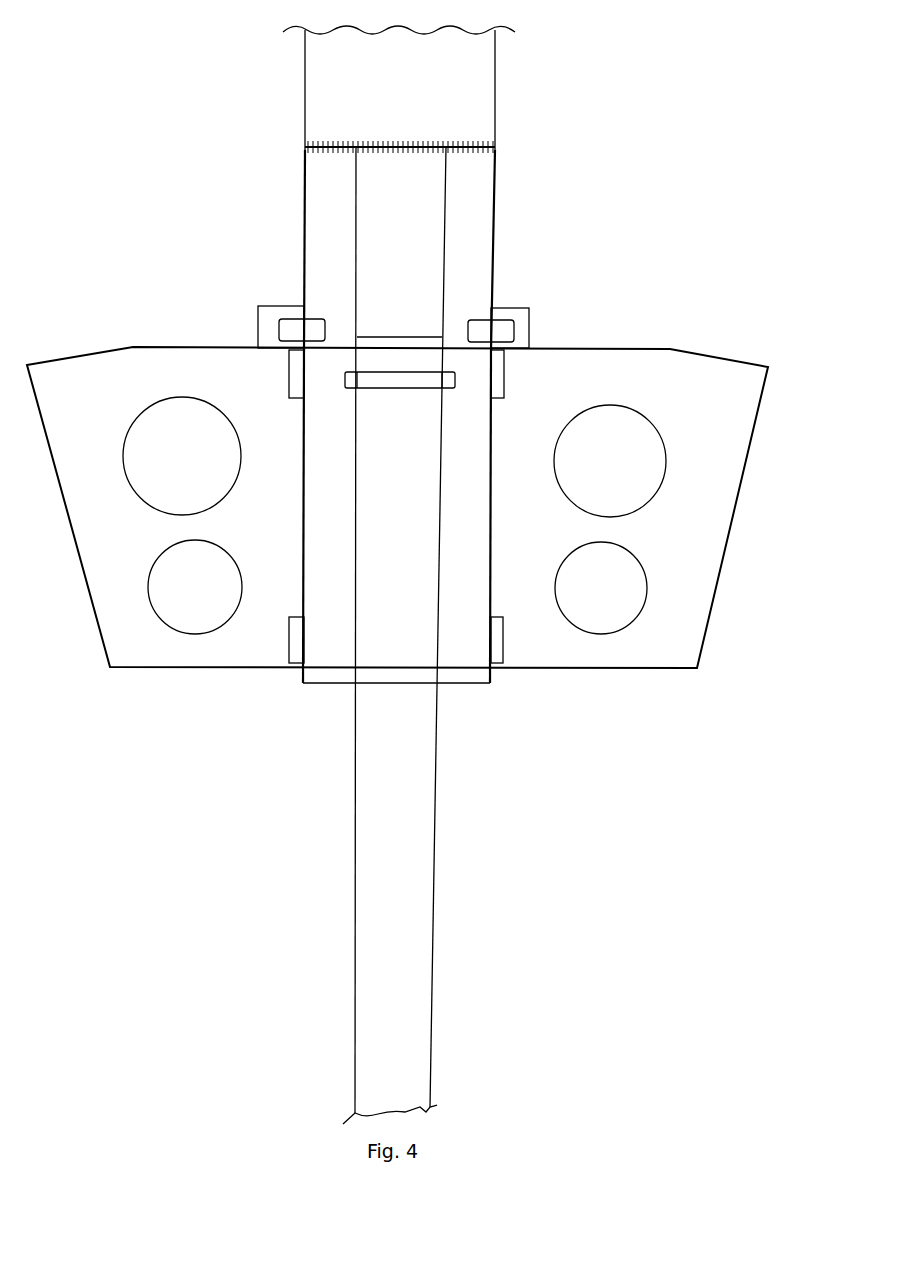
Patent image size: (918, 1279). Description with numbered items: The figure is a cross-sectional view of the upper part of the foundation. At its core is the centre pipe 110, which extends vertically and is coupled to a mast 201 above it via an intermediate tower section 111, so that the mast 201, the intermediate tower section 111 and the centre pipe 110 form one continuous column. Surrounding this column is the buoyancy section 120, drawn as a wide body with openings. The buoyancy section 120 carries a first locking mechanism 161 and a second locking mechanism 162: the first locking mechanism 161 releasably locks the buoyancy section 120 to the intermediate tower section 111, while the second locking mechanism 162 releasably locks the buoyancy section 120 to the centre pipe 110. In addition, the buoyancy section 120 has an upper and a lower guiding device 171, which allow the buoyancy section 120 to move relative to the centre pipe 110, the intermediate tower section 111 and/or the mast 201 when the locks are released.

The mast 201 is at (501, 90).
The intermediate tower section 111 is at (503, 227).
The centre pipe 110 is at (433, 862).
The buoyancy section 120 is at (188, 668).
The first locking mechanism 161 is at (293, 318).
The second locking mechanism 162 is at (460, 382).
The guiding device 171 is at (502, 643).